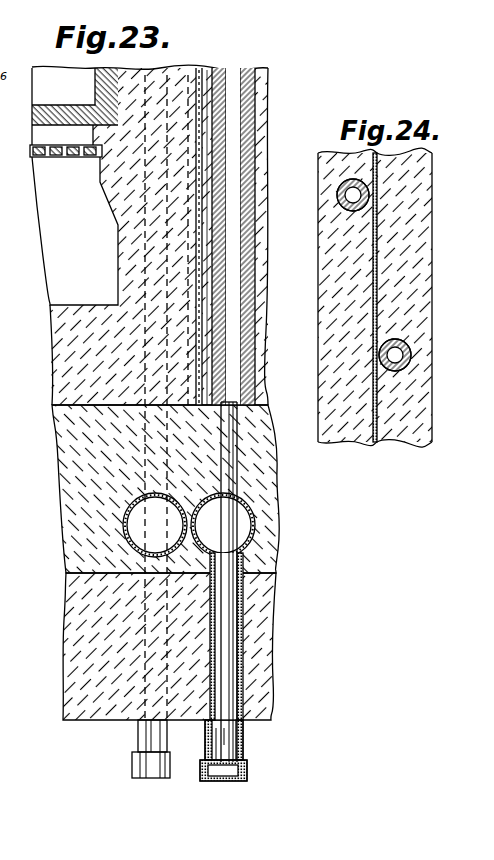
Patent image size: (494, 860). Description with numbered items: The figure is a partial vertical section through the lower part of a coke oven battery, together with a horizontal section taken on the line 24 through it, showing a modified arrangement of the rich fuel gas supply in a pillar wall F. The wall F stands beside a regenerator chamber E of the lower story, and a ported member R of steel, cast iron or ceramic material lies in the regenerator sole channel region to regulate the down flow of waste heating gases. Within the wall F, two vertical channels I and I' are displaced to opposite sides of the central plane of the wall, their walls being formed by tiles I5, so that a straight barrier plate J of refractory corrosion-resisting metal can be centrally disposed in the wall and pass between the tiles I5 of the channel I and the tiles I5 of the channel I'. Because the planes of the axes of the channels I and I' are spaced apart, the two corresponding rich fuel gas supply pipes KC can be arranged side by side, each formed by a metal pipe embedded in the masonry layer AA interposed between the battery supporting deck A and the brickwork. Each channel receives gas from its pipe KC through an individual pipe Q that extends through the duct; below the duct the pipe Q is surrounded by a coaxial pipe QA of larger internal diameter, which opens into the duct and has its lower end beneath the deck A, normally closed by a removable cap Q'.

In FIG. 23, the channel I is at (248, 222).
In FIG. 24, the channel I is at (413, 360).
In FIG. 23, the channel I' is at (200, 223).
In FIG. 24, the channel I' is at (329, 195).
In FIG. 23, the tiles I5 is at (180, 355).
In FIG. 24, the tiles I5 is at (344, 186).
In FIG. 23, the barrier plate J is at (200, 111).
In FIG. 24, the barrier plate J is at (377, 253).
In FIG. 23, the regenerator chamber E is at (75, 96).
In FIG. 23, the ported member R is at (76, 158).
In FIG. 23, the pillar wall F is at (113, 203).
In FIG. 24, the pillar wall F is at (432, 215).
In FIG. 23, the section line 24 is at (93, 228).
In FIG. 23, the pipe Q is at (266, 582).
In FIG. 23, the rich fuel gas supply pipe KC is at (125, 523).
In FIG. 23, the masonry layer AA is at (263, 559).
In FIG. 23, the deck A is at (270, 621).
In FIG. 23, the coaxial pipe QA is at (140, 740).
In FIG. 23, the cap Q' is at (231, 779).